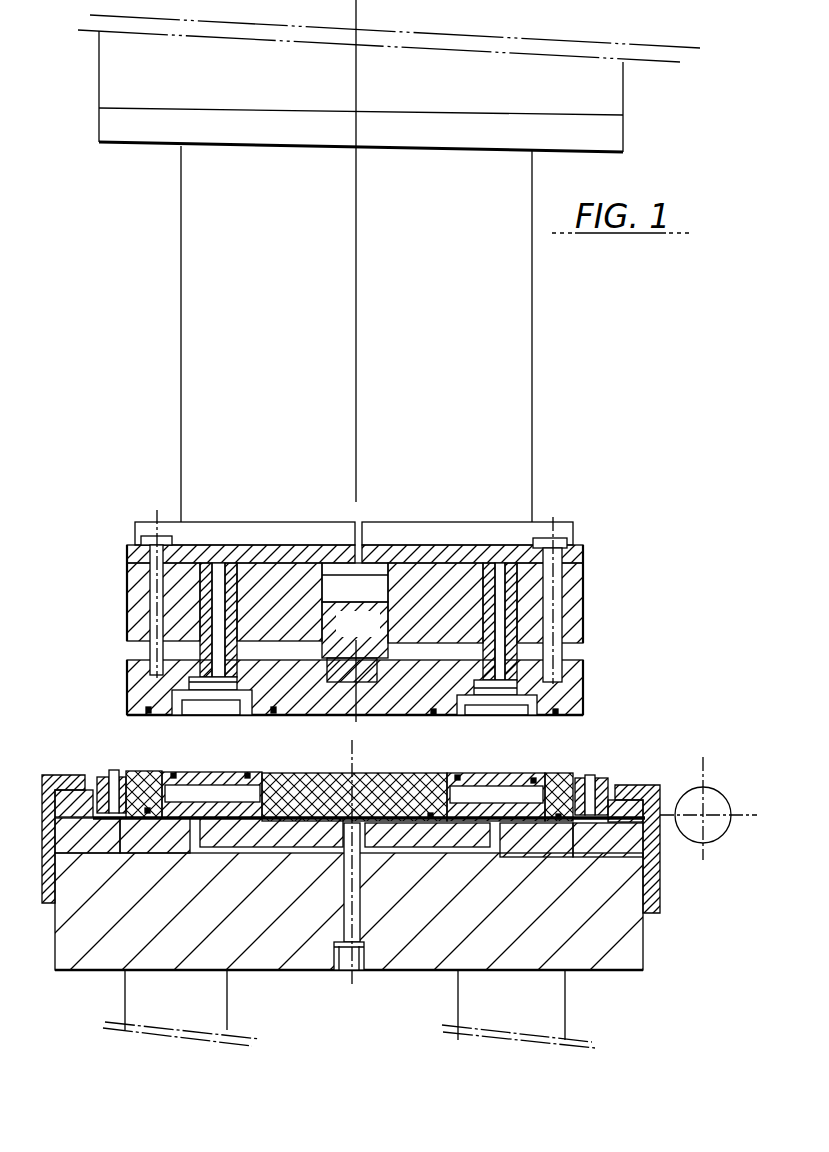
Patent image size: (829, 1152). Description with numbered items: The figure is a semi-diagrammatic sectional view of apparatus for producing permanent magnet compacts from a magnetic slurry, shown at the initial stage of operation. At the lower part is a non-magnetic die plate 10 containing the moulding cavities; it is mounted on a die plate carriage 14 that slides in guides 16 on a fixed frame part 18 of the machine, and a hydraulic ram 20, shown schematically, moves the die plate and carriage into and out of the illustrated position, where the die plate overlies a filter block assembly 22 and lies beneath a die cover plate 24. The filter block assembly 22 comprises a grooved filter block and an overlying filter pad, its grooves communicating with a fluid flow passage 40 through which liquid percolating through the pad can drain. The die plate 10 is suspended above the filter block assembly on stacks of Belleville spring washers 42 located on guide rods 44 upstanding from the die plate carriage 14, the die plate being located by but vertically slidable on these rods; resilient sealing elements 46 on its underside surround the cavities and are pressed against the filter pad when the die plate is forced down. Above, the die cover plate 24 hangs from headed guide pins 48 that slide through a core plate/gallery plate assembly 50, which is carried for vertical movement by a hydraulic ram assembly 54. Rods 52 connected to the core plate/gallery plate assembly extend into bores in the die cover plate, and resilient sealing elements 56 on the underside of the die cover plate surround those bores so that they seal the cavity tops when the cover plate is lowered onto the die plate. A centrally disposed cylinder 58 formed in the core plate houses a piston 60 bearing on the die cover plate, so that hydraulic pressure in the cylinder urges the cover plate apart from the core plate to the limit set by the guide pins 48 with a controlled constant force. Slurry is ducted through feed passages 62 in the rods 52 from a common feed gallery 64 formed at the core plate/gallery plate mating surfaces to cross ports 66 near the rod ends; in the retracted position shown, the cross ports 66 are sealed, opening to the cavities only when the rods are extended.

The die plate 10 is at (388, 766).
The die plate carriage 14 is at (641, 809).
The guides 16 is at (86, 788).
The fixed frame part 18 is at (625, 957).
The hydraulic ram 20 is at (722, 806).
The filter block assembly 22 is at (347, 775).
The die cover plate 24 is at (568, 693).
The fluid flow passage 40 is at (358, 932).
The Belleville spring washers 42 is at (99, 796).
The guide rods 44 is at (114, 769).
The resilient sealing elements 46 is at (270, 822).
The headed guide pins 48 is at (556, 629).
The core plate/gallery plate assembly 50 is at (576, 589).
The rods 52 is at (182, 650).
The hydraulic ram assembly 54 is at (305, 427).
The resilient sealing elements 56 is at (274, 712).
The cylinder 58 is at (370, 599).
The piston 60 is at (378, 635).
The feed passages 62 is at (487, 626).
The feed gallery 64 is at (397, 556).
The cross ports 66 is at (512, 697).